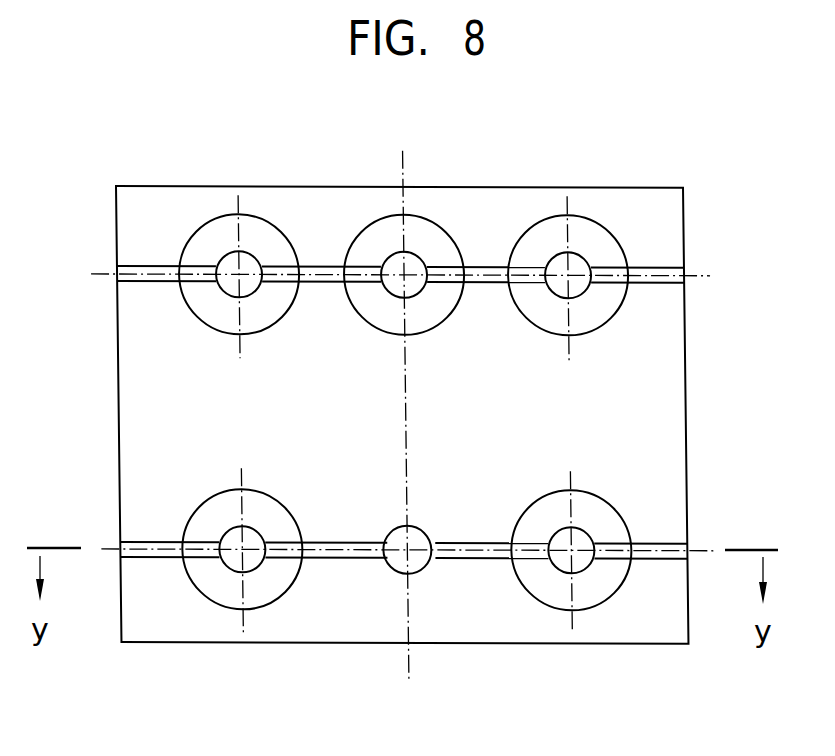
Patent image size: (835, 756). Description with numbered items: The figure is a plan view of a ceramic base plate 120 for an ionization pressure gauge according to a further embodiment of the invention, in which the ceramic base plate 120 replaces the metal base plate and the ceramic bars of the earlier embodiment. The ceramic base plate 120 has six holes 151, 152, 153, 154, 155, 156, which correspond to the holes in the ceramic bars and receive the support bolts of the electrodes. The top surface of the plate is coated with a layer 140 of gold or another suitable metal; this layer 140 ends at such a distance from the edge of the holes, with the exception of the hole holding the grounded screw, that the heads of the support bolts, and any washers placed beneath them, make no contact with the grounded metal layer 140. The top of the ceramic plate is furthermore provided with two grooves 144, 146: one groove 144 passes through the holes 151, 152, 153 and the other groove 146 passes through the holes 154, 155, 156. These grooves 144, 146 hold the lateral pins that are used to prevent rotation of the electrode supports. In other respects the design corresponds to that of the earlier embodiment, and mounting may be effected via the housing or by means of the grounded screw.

The ceramic base plate 120 is at (652, 158).
The layer of gold or other suitable metal 140 is at (648, 410).
The groove 144 is at (662, 545).
The groove 146 is at (657, 269).
The hole 151 is at (236, 563).
The hole 152 is at (400, 560).
The hole 153 is at (560, 563).
The hole 154 is at (228, 267).
The hole 155 is at (395, 268).
The hole 156 is at (560, 268).